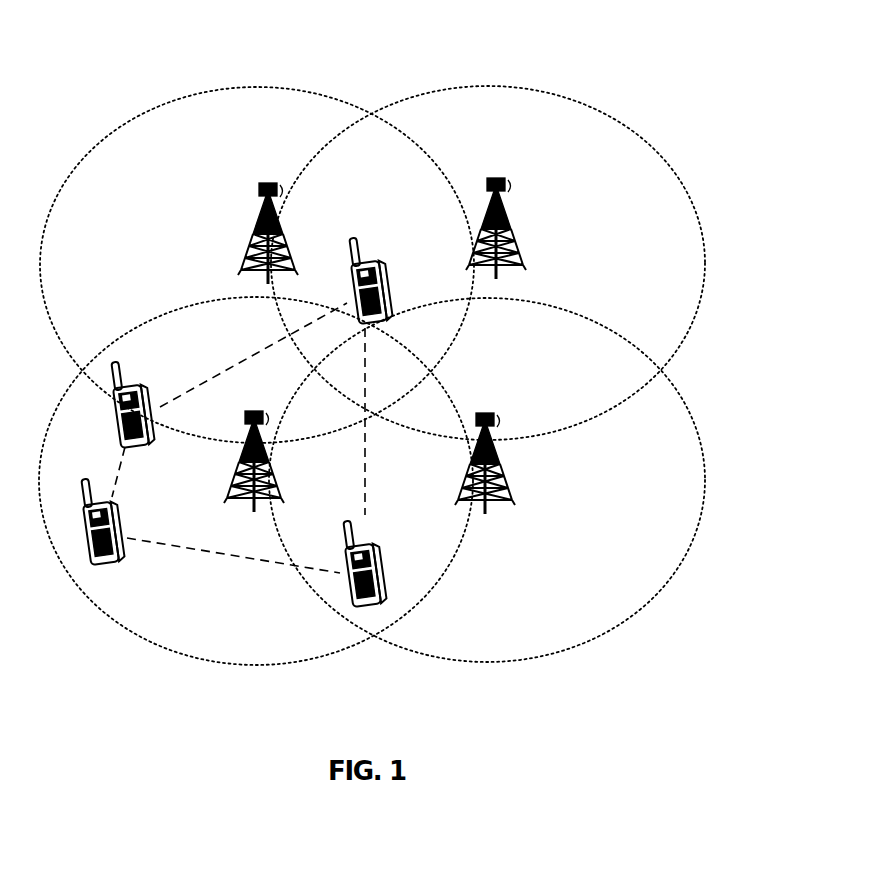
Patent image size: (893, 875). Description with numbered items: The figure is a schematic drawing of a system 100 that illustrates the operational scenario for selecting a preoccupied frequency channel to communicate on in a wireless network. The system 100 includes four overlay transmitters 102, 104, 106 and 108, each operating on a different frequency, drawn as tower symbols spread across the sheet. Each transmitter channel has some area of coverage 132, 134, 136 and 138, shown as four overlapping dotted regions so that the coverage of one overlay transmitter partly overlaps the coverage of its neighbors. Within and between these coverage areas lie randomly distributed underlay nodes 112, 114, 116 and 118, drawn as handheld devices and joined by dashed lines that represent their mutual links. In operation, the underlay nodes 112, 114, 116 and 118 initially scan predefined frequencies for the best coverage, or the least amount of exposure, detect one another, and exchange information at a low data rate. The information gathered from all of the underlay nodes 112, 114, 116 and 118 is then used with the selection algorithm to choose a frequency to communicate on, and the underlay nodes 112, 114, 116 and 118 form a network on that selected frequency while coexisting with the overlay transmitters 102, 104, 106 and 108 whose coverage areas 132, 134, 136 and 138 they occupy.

The system 100 is at (622, 75).
The overlay transmitter 102 is at (260, 168).
The overlay transmitter 104 is at (518, 222).
The overlay transmitter 106 is at (508, 424).
The overlay transmitter 108 is at (258, 402).
The underlay node 112 is at (382, 248).
The underlay node 114 is at (384, 536).
The underlay node 116 is at (152, 364).
The underlay node 118 is at (165, 485).
The area of coverage 132 is at (112, 126).
The area of coverage 134 is at (690, 190).
The area of coverage 136 is at (698, 428).
The area of coverage 138 is at (198, 656).